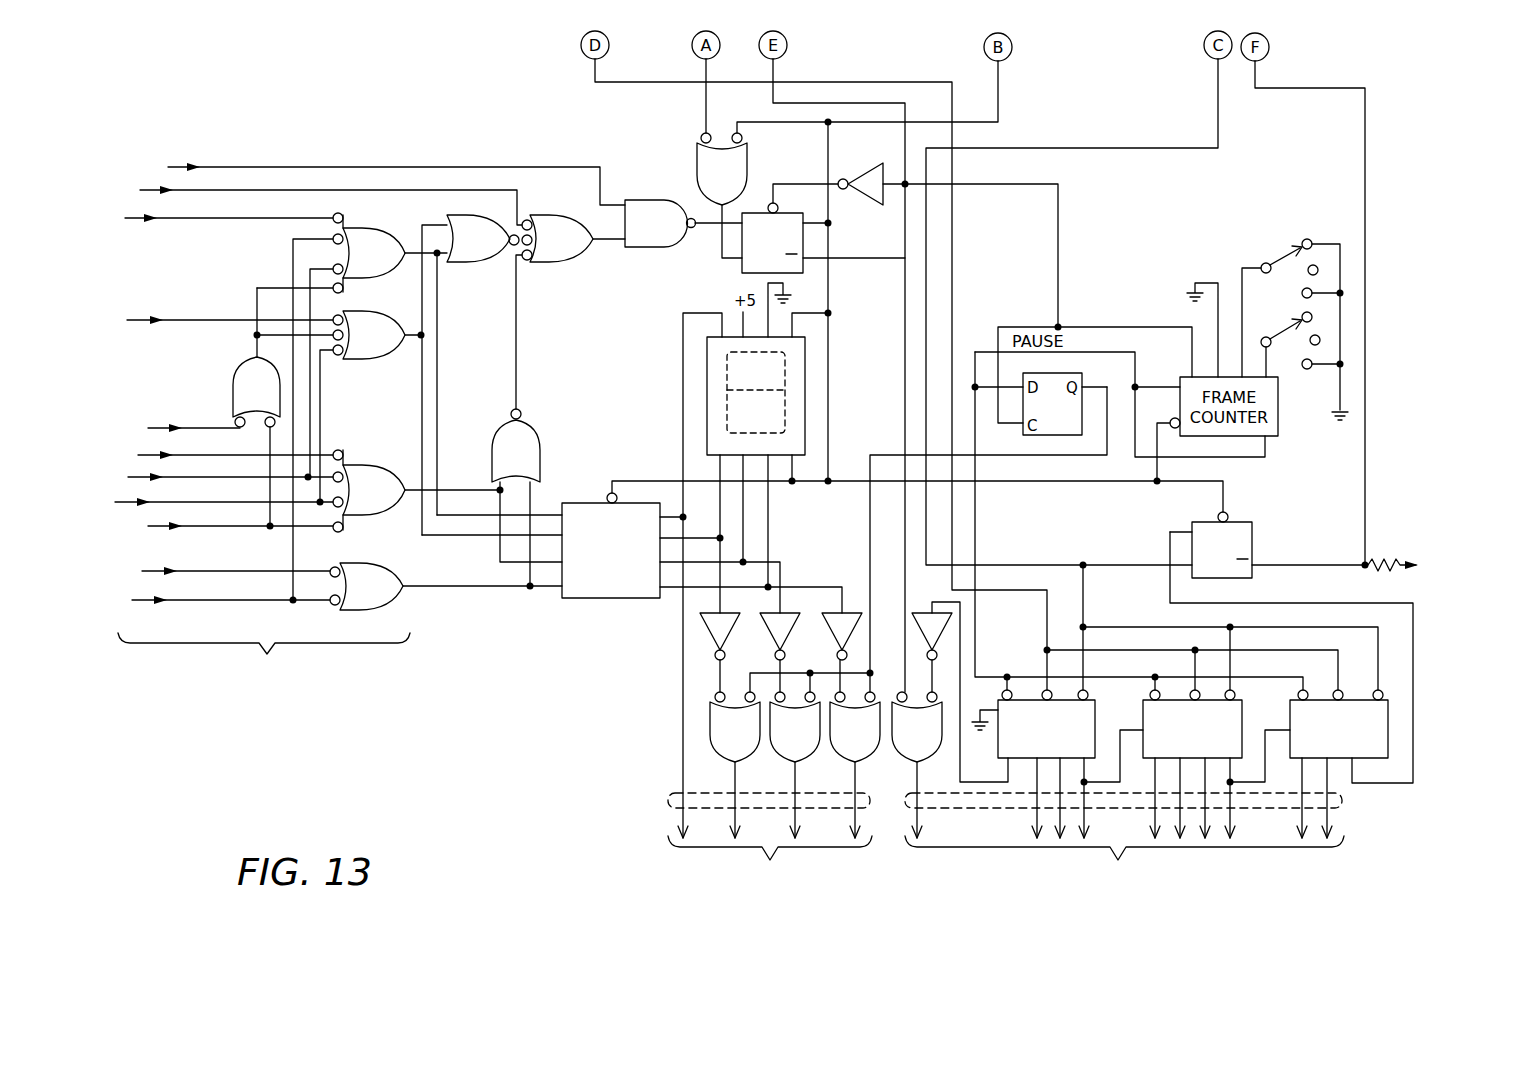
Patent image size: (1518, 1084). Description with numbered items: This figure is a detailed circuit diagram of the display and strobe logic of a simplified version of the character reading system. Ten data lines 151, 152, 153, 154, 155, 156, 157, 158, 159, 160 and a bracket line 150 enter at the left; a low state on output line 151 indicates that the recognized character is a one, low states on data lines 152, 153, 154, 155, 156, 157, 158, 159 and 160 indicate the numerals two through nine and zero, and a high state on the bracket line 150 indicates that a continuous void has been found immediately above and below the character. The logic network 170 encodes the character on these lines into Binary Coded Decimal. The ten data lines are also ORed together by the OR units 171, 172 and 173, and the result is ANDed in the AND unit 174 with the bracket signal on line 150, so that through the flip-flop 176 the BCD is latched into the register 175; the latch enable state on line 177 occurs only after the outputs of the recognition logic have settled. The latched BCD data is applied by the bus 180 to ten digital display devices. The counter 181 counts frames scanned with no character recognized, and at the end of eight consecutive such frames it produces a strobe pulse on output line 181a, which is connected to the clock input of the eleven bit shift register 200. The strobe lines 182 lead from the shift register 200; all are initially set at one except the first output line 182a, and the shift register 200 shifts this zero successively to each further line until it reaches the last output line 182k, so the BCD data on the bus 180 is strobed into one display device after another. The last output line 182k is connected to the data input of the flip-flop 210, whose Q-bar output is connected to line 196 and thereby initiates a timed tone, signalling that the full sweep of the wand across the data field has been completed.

The bracket line 150 is at (298, 166).
The data line 160 is at (258, 190).
The output line 151 is at (238, 219).
The data line 152 is at (213, 320).
The data line 153 is at (214, 426).
The data line 154 is at (222, 455).
The data line 155 is at (219, 477).
The data line 156 is at (195, 502).
The data line 157 is at (219, 526).
The data line 158 is at (208, 571).
The data line 159 is at (205, 600).
The logic network 170 is at (340, 447).
The OR unit 171 is at (532, 465).
The OR unit 172 is at (487, 249).
The OR unit 173 is at (572, 249).
The AND unit 174 is at (662, 235).
The register 175 is at (628, 532).
The flip-flop 176 is at (742, 270).
The latch enable line 177 is at (642, 480).
The bus 180 is at (668, 800).
The counter 181 is at (1232, 247).
The output line 181a is at (978, 352).
The strobe lines 182 is at (1342, 808).
The first output line 182a is at (913, 787).
The last output line 182k is at (1383, 784).
The line 196 is at (1407, 562).
The shift register 200 is at (1064, 738).
The flip-flop 210 is at (1252, 532).